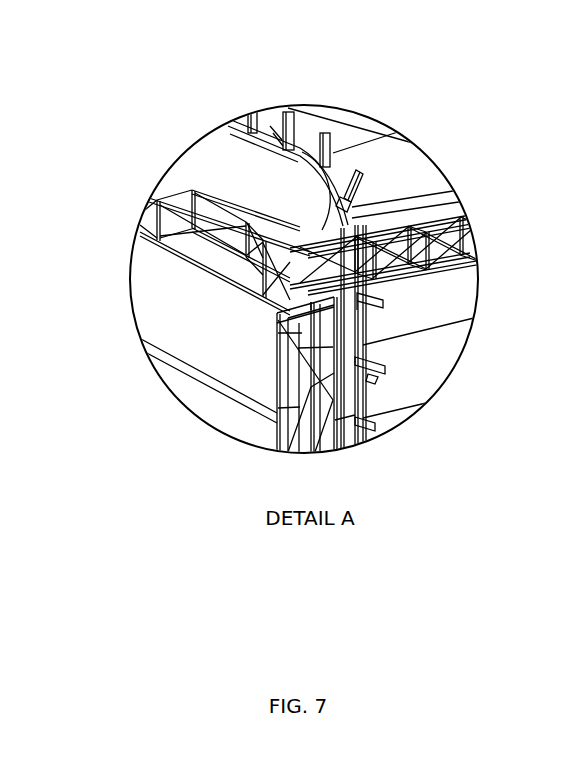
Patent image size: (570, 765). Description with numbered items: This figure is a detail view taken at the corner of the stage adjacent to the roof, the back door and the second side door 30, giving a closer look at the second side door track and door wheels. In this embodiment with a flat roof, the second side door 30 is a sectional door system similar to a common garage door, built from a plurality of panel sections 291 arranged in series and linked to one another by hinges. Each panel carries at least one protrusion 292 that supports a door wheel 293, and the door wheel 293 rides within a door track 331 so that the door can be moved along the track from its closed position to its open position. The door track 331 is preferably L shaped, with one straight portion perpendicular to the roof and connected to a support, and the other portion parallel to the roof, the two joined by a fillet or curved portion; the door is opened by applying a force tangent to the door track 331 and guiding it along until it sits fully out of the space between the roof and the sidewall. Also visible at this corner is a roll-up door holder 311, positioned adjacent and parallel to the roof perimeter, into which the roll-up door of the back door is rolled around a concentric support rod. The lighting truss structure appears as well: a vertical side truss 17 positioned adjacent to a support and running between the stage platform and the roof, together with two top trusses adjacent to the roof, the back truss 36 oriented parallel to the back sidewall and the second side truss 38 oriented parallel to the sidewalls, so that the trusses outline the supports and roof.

The second side door 30 is at (357, 133).
The roll-up door holder 311 is at (195, 170).
The panel section 291 is at (424, 203).
The protrusion 292 is at (258, 112).
The door wheel 293 is at (280, 147).
The back truss 36 is at (134, 243).
The second side truss 38 is at (478, 248).
The side truss 17 is at (277, 413).
The door track 331 is at (375, 440).